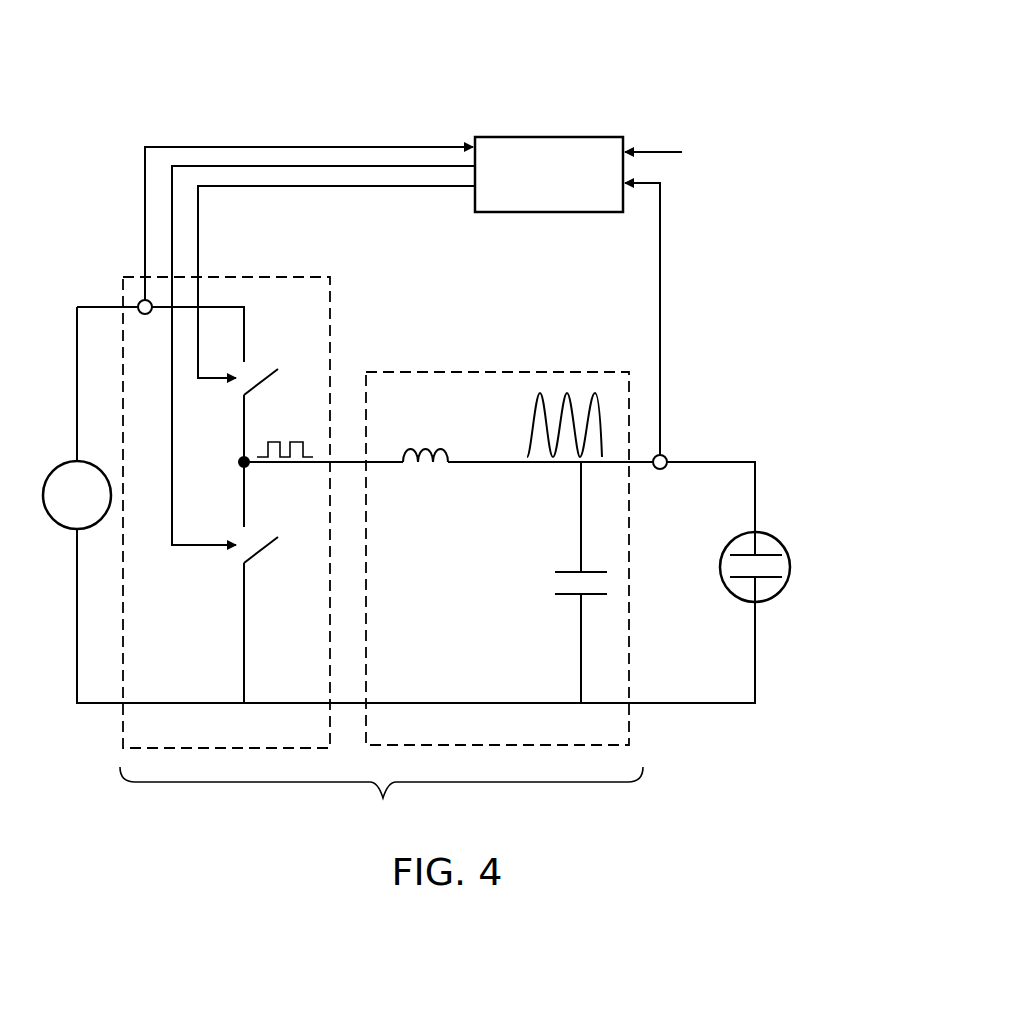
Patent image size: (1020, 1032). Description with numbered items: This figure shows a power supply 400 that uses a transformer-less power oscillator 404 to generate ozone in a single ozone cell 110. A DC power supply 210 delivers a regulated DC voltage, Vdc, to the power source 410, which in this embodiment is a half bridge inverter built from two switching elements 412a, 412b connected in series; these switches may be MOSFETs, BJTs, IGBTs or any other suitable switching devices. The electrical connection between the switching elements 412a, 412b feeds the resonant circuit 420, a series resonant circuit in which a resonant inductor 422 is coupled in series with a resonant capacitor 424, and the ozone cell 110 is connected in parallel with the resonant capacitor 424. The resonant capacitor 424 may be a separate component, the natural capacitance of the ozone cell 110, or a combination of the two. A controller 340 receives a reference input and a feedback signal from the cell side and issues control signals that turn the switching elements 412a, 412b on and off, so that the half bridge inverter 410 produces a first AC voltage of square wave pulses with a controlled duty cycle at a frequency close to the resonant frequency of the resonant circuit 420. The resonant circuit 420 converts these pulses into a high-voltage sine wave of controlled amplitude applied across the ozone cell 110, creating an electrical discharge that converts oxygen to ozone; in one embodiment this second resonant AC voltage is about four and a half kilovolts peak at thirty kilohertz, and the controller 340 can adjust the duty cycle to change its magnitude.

The power supply 400 is at (690, 61).
The controller 340 is at (592, 137).
The power source 410 is at (291, 276).
The switching element 412a is at (262, 356).
The switching element 412b is at (264, 525).
The resonant circuit 420 is at (501, 372).
The resonant inductor 422 is at (427, 465).
The resonant capacitor 424 is at (553, 580).
The DC power supply 210 is at (62, 463).
The ozone cell 110 is at (782, 591).
The transformer-less power oscillator 404 is at (381, 796).